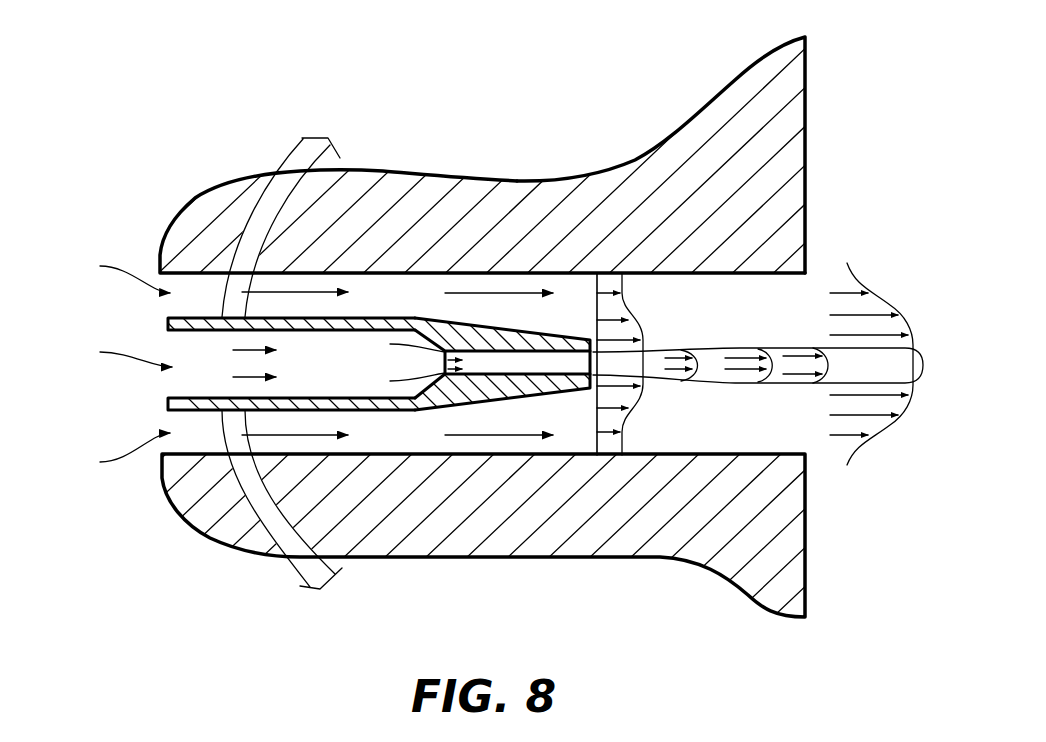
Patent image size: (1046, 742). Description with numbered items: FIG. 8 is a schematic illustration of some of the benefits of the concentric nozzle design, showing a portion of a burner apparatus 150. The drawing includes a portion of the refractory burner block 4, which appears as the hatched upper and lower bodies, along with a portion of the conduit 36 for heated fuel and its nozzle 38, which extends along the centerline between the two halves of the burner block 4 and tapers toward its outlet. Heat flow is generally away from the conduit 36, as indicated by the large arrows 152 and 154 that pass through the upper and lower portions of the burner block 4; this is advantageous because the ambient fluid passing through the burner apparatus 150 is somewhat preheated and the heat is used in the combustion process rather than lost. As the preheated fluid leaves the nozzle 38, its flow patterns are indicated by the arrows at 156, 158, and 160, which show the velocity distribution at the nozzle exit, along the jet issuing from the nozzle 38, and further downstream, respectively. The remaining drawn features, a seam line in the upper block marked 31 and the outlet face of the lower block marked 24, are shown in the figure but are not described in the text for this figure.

The burner apparatus 150 is at (523, 320).
The refractory burner block 4 is at (753, 85).
The large arrow 152 is at (302, 163).
The large arrow 154 is at (298, 563).
The burner block 31 is at (418, 276).
The conduit 36 is at (372, 410).
The nozzle 38 is at (497, 402).
The arrows 156 is at (625, 413).
The arrows 158 is at (763, 348).
The arrows 160 is at (875, 293).
The burner outlet face 24 is at (803, 443).